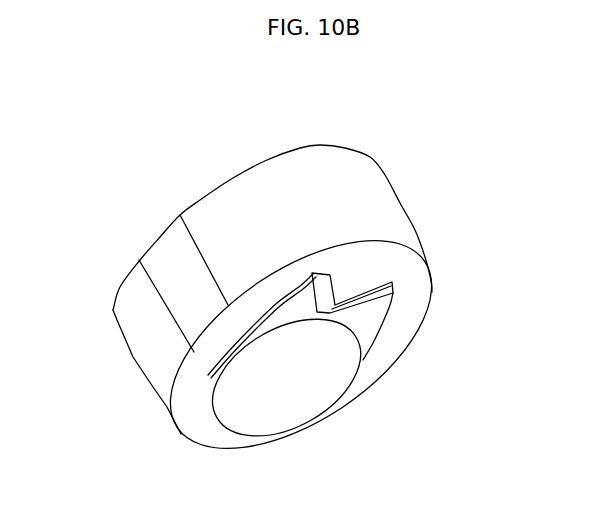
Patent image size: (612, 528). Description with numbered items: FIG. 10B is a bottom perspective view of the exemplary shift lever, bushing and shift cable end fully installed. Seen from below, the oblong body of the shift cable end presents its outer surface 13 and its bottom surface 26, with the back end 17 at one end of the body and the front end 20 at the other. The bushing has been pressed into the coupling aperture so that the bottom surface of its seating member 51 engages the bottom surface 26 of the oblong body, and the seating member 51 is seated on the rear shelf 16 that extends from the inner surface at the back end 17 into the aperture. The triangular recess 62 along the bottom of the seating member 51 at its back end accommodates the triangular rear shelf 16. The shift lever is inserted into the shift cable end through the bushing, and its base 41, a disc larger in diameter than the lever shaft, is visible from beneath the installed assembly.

The outer surface 13 is at (170, 257).
The rear shelf 16 is at (365, 278).
The back end 17 is at (357, 173).
The front end 20 is at (135, 360).
The bottom surface 26 is at (197, 422).
The base 41 is at (312, 385).
The seating member 51 is at (368, 316).
The triangular recess 62 is at (327, 292).